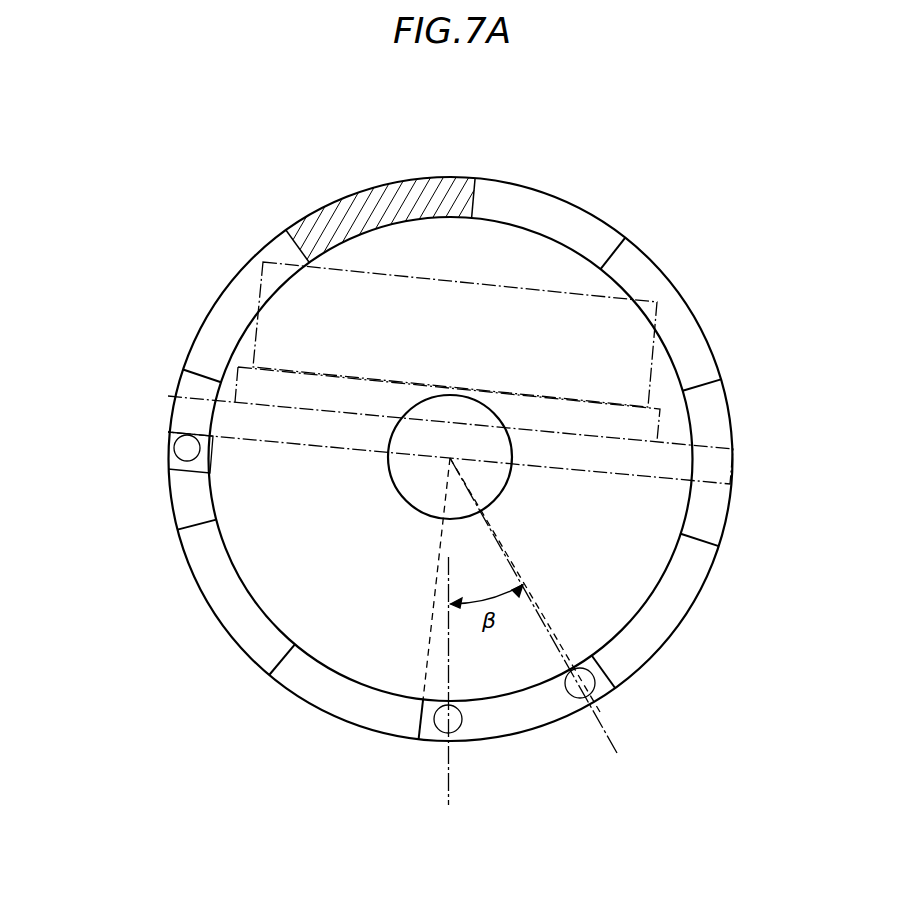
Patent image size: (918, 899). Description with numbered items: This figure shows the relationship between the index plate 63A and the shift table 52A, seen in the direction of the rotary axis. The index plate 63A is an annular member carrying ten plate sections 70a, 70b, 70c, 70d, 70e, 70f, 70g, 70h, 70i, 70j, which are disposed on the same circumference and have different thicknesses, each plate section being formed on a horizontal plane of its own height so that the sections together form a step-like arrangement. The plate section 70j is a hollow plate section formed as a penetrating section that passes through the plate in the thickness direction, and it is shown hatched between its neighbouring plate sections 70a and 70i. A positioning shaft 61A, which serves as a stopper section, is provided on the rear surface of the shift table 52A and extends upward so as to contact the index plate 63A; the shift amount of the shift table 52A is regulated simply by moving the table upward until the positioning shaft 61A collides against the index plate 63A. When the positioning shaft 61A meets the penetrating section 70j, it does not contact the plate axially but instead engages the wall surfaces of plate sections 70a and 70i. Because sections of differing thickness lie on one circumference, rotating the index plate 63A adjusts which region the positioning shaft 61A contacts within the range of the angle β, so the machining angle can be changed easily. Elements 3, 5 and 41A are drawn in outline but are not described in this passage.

The index plate 63A is at (540, 182).
The plate section 70a is at (218, 302).
The plate section 70b is at (182, 502).
The plate section 70c is at (230, 620).
The plate section 70d is at (352, 708).
The plate section 70e is at (527, 717).
The plate section 70f is at (676, 627).
The plate section 70g is at (718, 507).
The plate section 70h is at (677, 300).
The plate section 70i is at (578, 213).
The penetrating section 70j is at (370, 188).
The housing body 3 is at (572, 291).
The mounting portion 5 is at (656, 410).
The shift table 52A is at (777, 450).
The shaft (41A, 41B) 41A is at (400, 487).
The positioning shaft 61A is at (187, 448).